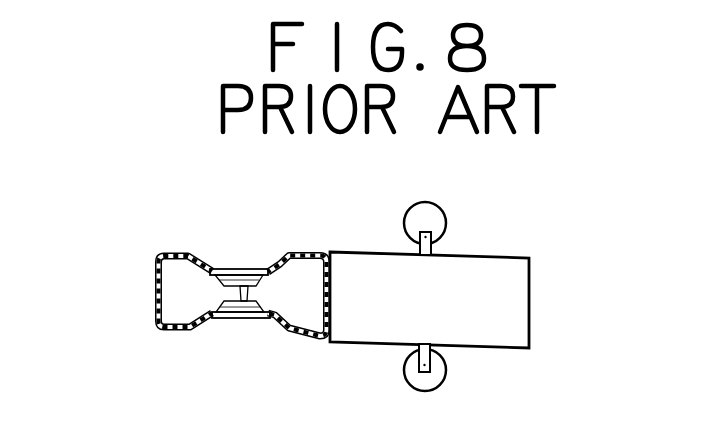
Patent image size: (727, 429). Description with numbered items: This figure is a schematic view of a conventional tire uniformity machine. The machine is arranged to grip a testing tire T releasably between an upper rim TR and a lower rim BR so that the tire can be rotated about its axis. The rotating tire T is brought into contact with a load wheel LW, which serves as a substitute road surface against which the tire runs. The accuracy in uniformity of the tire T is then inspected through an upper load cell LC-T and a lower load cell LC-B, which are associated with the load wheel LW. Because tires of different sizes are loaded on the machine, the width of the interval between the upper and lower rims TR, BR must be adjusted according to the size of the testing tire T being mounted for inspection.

The testing tire T is at (155, 285).
The upper rim TR is at (247, 262).
The lower rim BR is at (240, 325).
The load wheel LW is at (518, 250).
The upper load cell LC-T is at (428, 212).
The lower load cell LC-B is at (435, 378).